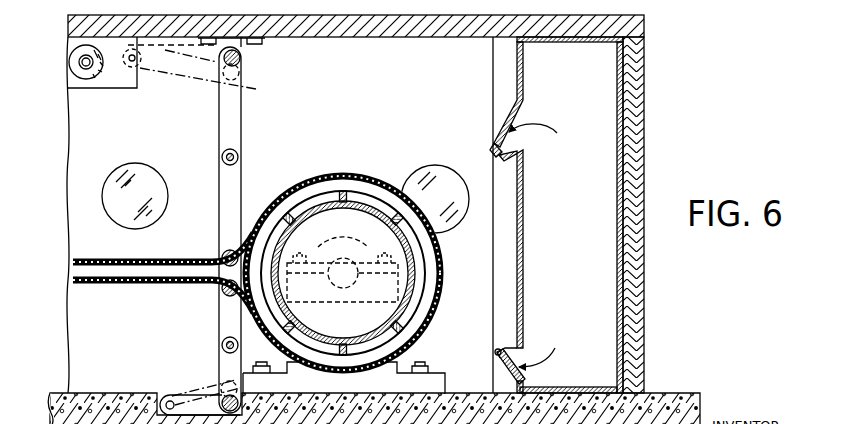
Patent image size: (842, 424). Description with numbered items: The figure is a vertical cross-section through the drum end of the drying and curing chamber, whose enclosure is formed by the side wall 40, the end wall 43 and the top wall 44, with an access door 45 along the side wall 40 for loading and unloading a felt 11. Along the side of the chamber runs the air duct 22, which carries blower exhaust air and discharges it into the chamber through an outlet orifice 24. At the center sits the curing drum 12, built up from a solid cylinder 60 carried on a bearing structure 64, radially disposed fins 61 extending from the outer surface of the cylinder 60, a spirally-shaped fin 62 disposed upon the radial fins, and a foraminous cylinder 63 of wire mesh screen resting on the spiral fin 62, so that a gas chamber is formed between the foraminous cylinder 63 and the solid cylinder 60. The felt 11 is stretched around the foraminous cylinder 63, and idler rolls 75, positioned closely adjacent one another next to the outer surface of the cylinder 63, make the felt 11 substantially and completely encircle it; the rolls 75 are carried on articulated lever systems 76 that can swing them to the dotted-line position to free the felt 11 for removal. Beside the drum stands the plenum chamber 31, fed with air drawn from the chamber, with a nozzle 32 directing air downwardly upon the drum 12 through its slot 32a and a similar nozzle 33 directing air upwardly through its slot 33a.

The felt 11 is at (341, 173).
The curing drum 12 is at (366, 226).
The air duct 22 is at (122, 82).
The outlet orifice 24 is at (94, 79).
The plenum chamber 31 is at (604, 153).
The nozzle 32 is at (497, 140).
The slot 32a is at (494, 158).
The nozzle 33 is at (498, 347).
The slot 33a is at (496, 350).
The side wall 40 is at (501, 64).
The end wall 43 is at (637, 374).
The top wall 44 is at (420, 22).
The access door 45 is at (78, 358).
The cylinder 60 is at (284, 239).
The radially disposed fins 61 is at (334, 252).
The spirally-shaped fin 62 is at (342, 284).
The foraminous cylinder 63 is at (441, 273).
The bearing structure 64 is at (350, 242).
The idler rolls 75 is at (256, 89).
The articulated lever systems 76 is at (228, 130).